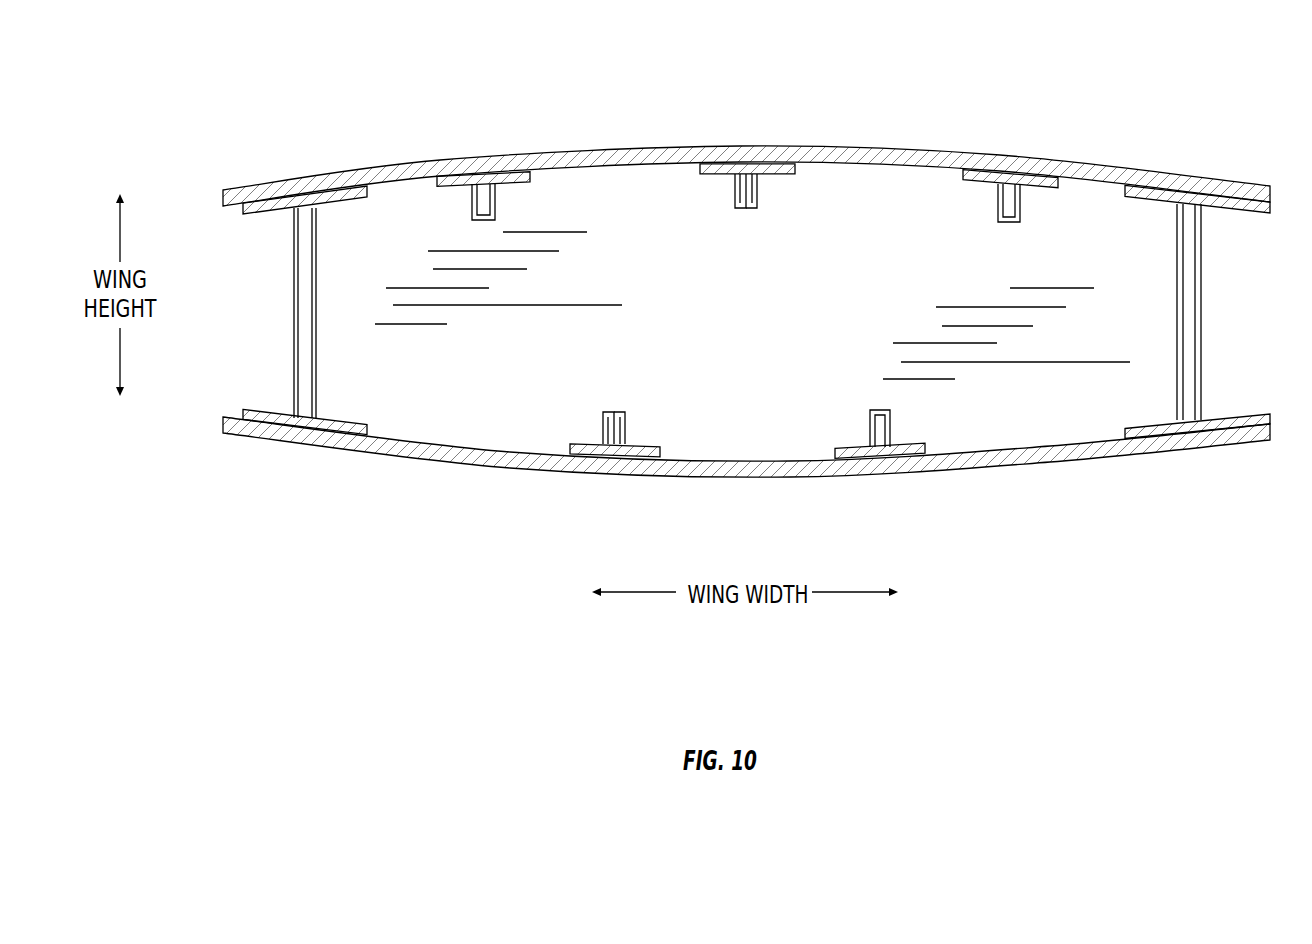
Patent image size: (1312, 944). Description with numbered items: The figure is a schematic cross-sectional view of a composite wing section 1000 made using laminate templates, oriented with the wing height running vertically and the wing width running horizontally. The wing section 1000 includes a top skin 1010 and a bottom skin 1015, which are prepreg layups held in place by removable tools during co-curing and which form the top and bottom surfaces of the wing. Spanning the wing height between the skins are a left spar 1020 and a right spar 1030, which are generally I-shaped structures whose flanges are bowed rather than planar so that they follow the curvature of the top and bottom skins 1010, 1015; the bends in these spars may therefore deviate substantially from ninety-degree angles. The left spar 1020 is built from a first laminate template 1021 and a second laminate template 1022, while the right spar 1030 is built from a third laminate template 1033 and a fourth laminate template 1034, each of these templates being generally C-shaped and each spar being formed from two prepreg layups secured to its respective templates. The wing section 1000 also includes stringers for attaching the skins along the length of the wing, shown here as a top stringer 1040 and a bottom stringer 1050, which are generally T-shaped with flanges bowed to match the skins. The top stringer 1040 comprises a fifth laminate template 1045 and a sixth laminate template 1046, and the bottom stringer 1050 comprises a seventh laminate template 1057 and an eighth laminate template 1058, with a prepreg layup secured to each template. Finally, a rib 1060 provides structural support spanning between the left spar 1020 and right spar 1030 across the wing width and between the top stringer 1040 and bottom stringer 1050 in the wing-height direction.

The wing section 1000 is at (177, 96).
The top skin 1010 is at (878, 147).
The bottom skin 1015 is at (996, 470).
The left spar 1020 is at (311, 310).
The first laminate template 1021 is at (294, 382).
The second laminate template 1022 is at (317, 391).
The right spar 1030 is at (1197, 311).
The third laminate template 1033 is at (1176, 352).
The fourth laminate template 1034 is at (1202, 355).
The top stringer 1040 is at (744, 226).
The fifth laminate template 1045 is at (711, 177).
The sixth laminate template 1046 is at (778, 177).
The bottom stringer 1050 is at (606, 392).
The seventh laminate template 1057 is at (586, 446).
The eighth laminate template 1058 is at (642, 448).
The rib 1060 is at (579, 186).